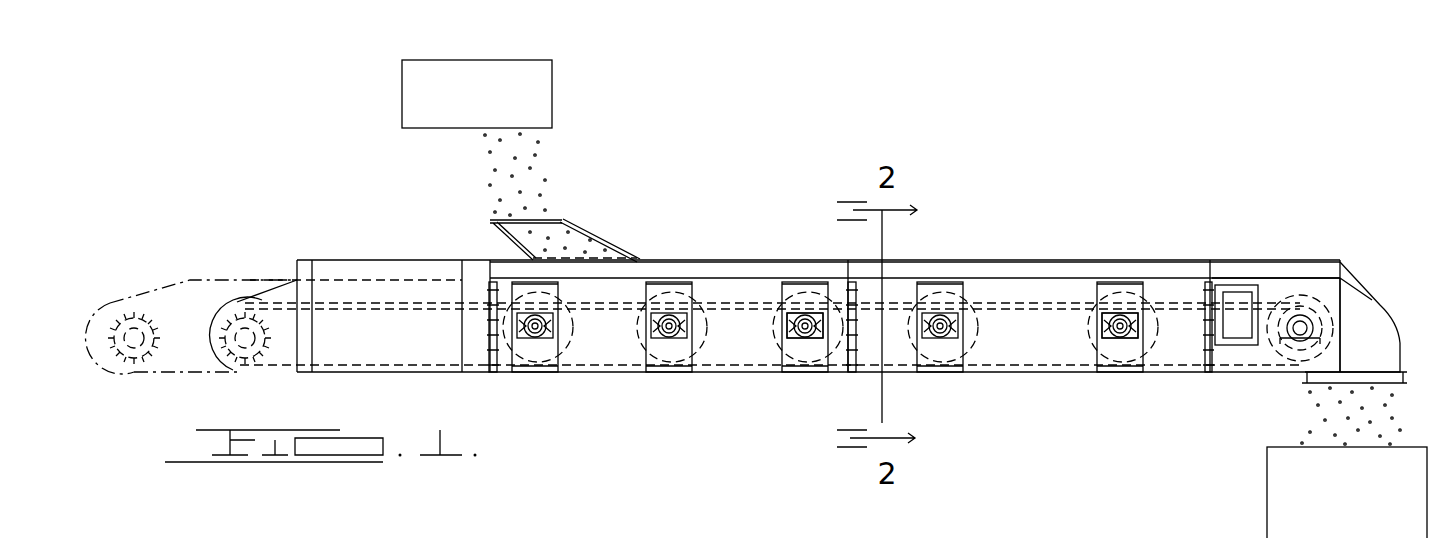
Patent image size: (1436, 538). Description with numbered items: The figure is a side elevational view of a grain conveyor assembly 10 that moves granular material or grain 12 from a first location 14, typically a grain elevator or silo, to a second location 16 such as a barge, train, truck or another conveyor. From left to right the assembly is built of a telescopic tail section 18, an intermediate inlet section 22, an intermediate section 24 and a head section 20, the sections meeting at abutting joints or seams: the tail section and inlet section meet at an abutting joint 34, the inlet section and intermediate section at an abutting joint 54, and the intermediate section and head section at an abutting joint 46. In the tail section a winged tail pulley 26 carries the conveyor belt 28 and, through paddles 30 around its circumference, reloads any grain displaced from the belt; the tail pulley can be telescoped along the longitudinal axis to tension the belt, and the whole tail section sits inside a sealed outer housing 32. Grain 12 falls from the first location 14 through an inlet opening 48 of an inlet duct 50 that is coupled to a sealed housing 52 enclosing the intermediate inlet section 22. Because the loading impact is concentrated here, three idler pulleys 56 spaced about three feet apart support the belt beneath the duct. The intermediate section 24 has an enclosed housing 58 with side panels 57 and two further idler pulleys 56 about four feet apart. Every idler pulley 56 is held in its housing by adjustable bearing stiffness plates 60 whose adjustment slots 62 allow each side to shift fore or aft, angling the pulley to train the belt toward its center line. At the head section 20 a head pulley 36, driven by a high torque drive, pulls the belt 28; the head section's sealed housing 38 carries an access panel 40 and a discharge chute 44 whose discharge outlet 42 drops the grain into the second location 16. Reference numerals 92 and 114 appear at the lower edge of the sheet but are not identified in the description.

The grain conveyor assembly 10 is at (1062, 142).
The grain 12 is at (488, 162).
The first location 14 is at (552, 78).
The second location 16 is at (1267, 480).
The telescopic tail section 18 is at (390, 375).
The head section 20 is at (1235, 258).
The intermediate inlet section 22 is at (737, 262).
The intermediate section 24 is at (1058, 265).
The winged tail pulley 26 is at (240, 365).
The conveyor belt 28 is at (410, 305).
The paddles 30 is at (255, 310).
The sealed outer housing 32 is at (345, 268).
The abutting joint 34 is at (490, 373).
The head pulley 36 is at (1320, 310).
The sealed housing 38 is at (1295, 265).
The access panel 40 is at (1232, 333).
The discharge outlet 42 is at (1395, 383).
The discharge chute 44 is at (1385, 335).
The abutting joint 46 is at (1208, 282).
The inlet opening 48 is at (540, 218).
The inlet duct 50 is at (575, 243).
The sealed housing 52 is at (690, 265).
The abutting joint 54 is at (847, 373).
The idler pulleys 56 is at (573, 340).
The side panels 57 is at (718, 350).
The enclosed housing 58 is at (963, 270).
The adjustable bearing stiffness plates 60 is at (797, 357).
The adjustment slots 62 is at (793, 282).
The component (partial) 92 is at (583, 537).
The component (partial) 114 is at (1043, 531).